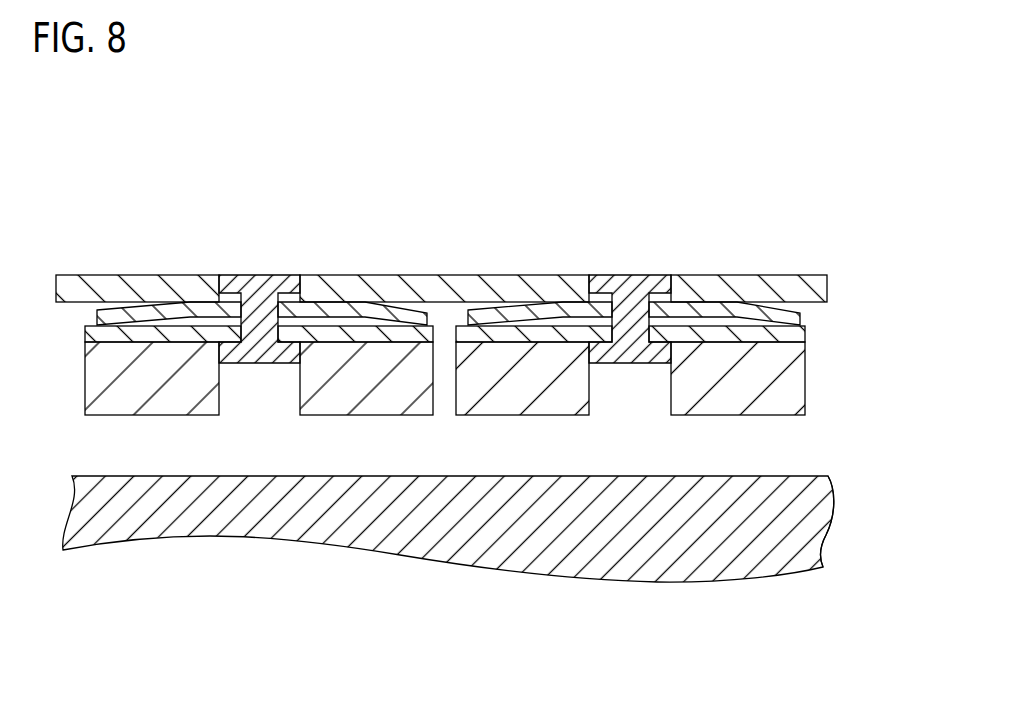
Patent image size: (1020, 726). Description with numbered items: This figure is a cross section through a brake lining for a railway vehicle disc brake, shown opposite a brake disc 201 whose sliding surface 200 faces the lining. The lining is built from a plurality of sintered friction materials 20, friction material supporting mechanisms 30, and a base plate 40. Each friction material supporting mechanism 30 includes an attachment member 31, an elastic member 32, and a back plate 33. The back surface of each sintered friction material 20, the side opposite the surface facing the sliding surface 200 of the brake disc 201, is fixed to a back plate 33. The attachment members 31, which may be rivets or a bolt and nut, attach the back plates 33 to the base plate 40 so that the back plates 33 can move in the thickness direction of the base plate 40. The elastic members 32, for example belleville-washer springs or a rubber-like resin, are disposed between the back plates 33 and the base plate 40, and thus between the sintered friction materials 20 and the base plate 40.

The sintered friction material 20 is at (95, 385).
The friction material supporting mechanism 30 is at (445, 257).
The attachment member 31 is at (258, 293).
The elastic member 32 is at (317, 310).
The back plate 33 is at (332, 207).
The base plate 40 is at (803, 288).
The sliding surface 200 is at (817, 475).
The brake disc 201 is at (822, 517).